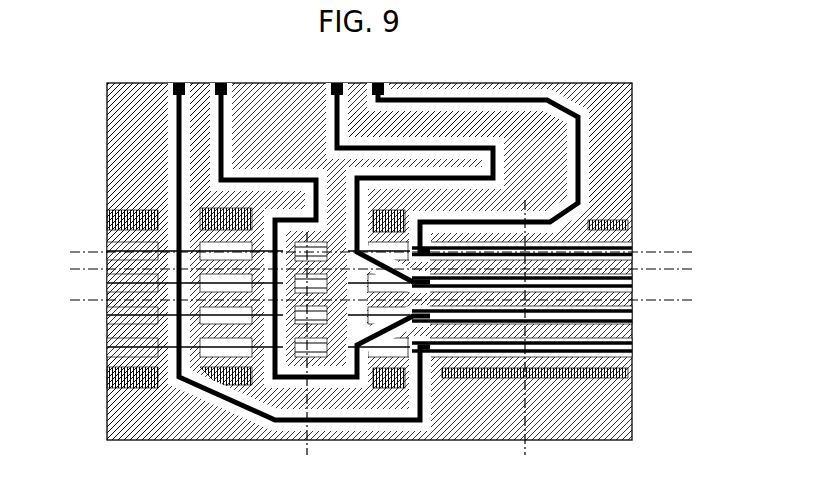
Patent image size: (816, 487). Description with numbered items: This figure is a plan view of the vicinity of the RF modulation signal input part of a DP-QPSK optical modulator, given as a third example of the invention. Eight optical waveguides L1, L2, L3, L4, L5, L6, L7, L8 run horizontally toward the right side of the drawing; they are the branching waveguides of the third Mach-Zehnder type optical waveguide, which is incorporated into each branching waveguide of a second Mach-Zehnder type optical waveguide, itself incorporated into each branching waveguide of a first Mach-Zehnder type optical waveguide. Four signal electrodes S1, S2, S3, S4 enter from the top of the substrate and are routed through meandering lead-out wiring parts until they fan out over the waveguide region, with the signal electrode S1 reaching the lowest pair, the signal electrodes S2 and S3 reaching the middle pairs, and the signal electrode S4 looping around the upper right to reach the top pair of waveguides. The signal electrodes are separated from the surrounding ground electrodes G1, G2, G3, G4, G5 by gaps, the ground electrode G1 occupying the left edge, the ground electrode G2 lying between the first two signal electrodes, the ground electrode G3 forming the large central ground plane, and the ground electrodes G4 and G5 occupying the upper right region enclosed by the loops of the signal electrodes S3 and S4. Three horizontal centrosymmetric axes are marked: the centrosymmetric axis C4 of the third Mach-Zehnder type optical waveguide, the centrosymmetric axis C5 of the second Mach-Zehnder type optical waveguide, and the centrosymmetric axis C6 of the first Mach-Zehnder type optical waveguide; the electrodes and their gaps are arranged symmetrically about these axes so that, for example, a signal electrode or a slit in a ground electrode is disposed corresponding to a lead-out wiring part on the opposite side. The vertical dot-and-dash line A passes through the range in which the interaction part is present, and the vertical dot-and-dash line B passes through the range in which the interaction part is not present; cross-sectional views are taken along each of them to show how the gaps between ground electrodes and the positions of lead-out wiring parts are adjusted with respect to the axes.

The ground electrode G1 is at (143, 80).
The ground electrode G2 is at (203, 80).
The ground electrode G3 is at (273, 88).
The ground electrode G4 is at (408, 125).
The ground electrode G5 is at (502, 82).
The signal electrode S1 is at (177, 143).
The signal electrode S2 is at (224, 100).
The signal electrode S3 is at (340, 100).
The signal electrode S4 is at (561, 102).
The optical waveguide L1 is at (632, 245).
The optical waveguide L2 is at (632, 257).
The optical waveguide L3 is at (632, 277).
The optical waveguide L4 is at (632, 289).
The optical waveguide L5 is at (632, 310).
The optical waveguide L6 is at (632, 322).
The optical waveguide L7 is at (632, 342).
The optical waveguide L8 is at (632, 353).
The centrosymmetric axis C4 is at (365, 249).
The centrosymmetric axis C5 is at (365, 273).
The centrosymmetric axis C6 is at (365, 303).
The dot-and-dash line A is at (527, 341).
The dot-and-dash line B is at (308, 357).